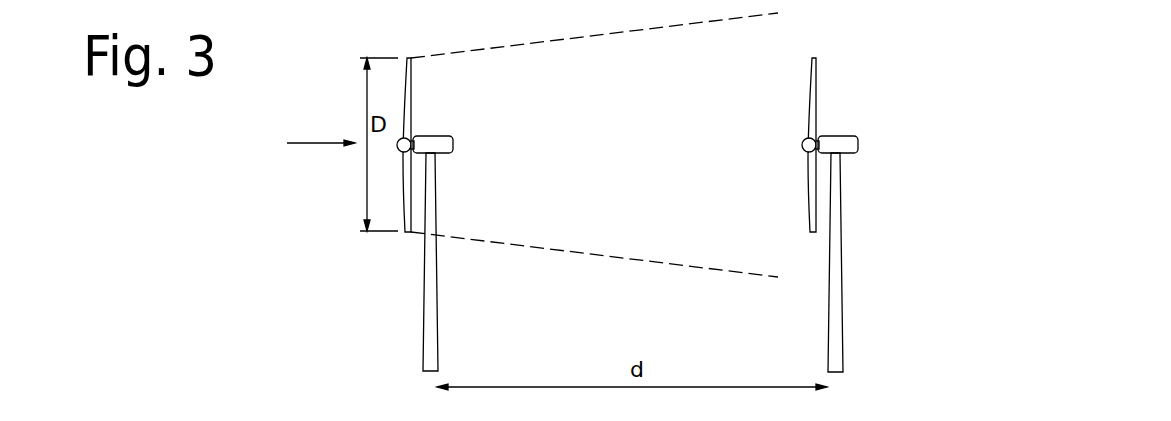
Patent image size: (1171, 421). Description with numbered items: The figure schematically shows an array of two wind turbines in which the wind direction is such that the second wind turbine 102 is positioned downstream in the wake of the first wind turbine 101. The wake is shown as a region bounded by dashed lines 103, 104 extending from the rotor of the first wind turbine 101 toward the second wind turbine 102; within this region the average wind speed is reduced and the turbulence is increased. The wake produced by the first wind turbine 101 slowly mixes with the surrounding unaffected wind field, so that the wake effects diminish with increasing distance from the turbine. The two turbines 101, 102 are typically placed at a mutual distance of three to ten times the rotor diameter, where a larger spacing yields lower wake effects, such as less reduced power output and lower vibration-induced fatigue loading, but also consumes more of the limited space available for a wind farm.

The first wind turbine 101 is at (410, 280).
The second wind turbine 102 is at (815, 292).
The dashed line 103 is at (620, 258).
The dashed line 104 is at (637, 30).